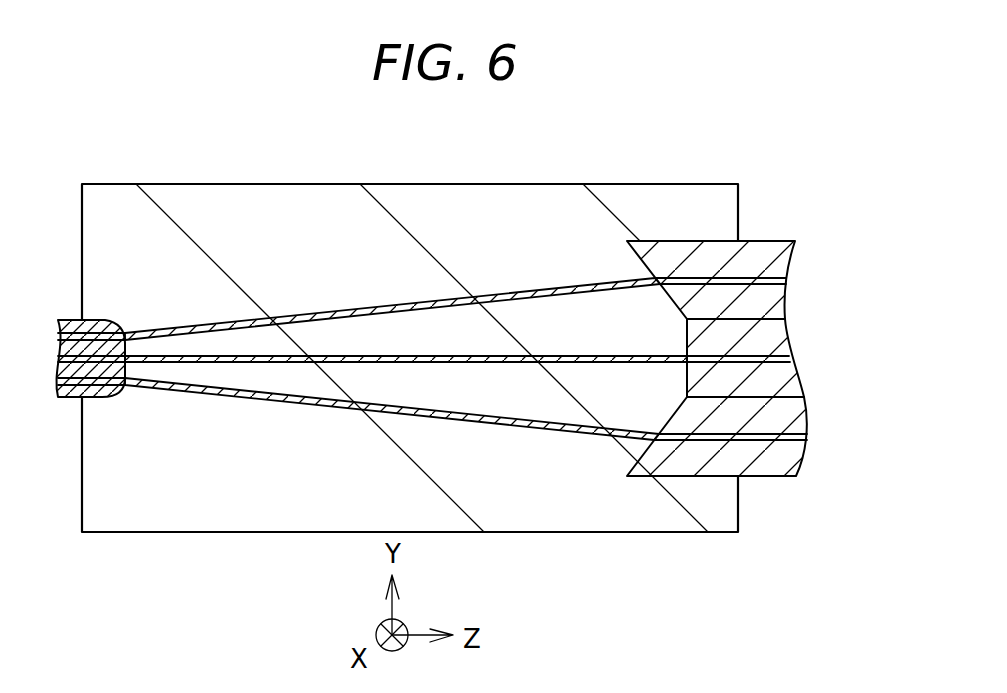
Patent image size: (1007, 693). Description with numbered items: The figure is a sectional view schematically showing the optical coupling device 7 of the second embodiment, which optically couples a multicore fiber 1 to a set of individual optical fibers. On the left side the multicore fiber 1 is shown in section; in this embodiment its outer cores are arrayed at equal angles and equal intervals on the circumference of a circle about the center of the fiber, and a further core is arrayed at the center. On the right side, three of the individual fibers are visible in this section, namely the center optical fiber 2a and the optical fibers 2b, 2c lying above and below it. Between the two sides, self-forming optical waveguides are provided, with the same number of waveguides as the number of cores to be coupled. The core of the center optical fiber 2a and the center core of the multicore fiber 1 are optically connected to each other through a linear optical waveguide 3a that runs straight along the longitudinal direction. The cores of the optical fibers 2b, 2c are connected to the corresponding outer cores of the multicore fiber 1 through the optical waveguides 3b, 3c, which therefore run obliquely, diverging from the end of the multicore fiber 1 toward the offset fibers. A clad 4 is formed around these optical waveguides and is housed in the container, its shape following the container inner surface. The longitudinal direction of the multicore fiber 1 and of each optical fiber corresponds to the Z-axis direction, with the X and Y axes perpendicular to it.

The multicore fiber 1 is at (110, 310).
The center optical fiber 2a is at (757, 383).
The optical fiber 2b is at (767, 257).
The optical fiber 2c is at (763, 463).
The linear optical waveguide 3a is at (592, 355).
The optical waveguide 3b is at (529, 290).
The optical waveguide 3c is at (508, 426).
The clad 4 is at (170, 483).
The optical coupling device 7 is at (589, 562).